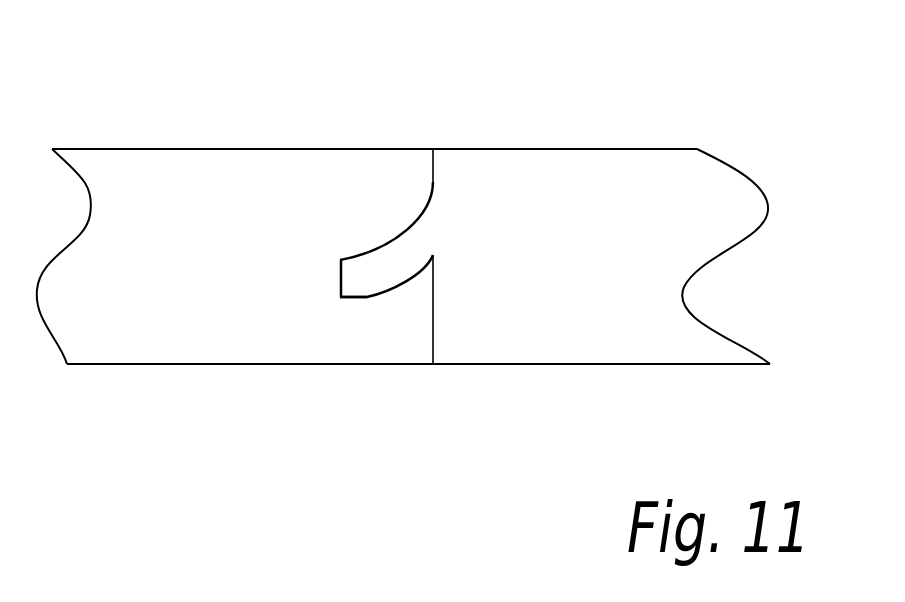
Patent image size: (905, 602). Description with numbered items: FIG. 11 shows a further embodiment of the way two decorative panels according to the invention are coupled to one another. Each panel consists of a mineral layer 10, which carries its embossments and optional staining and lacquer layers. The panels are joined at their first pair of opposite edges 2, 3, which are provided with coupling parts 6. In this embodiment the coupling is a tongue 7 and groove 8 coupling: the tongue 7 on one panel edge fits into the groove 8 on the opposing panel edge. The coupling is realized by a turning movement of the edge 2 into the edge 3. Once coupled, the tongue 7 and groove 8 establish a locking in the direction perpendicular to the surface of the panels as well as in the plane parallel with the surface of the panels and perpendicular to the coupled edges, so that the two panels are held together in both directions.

The edge 2 is at (508, 98).
The edge 3 is at (329, 115).
The coupling parts 6 is at (373, 112).
The tongue 7 is at (395, 262).
The groove 8 is at (363, 268).
The mineral layer 10 is at (610, 208).